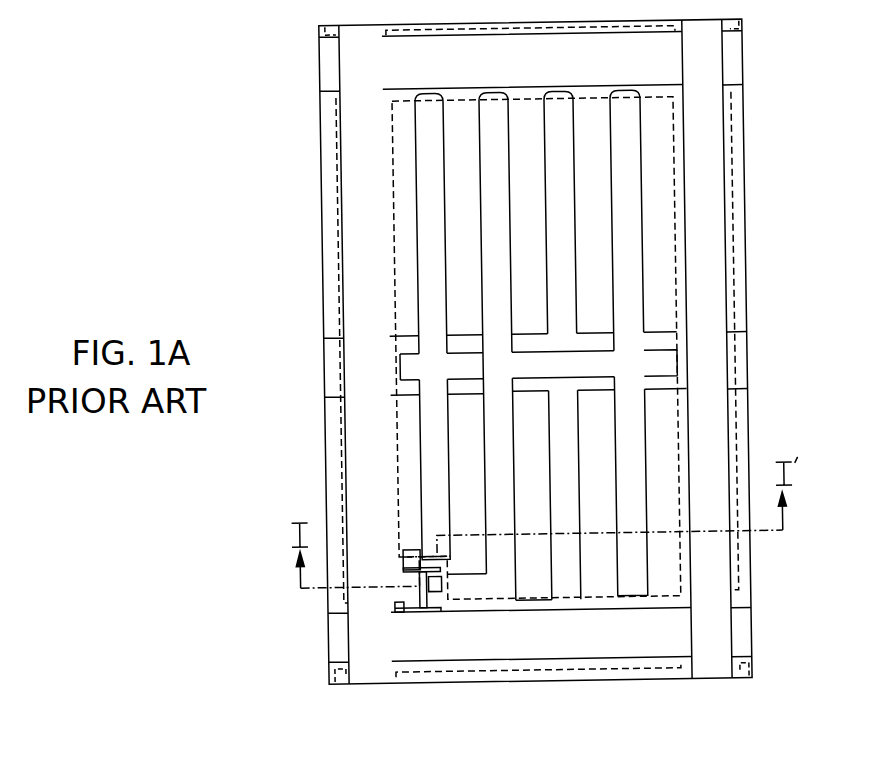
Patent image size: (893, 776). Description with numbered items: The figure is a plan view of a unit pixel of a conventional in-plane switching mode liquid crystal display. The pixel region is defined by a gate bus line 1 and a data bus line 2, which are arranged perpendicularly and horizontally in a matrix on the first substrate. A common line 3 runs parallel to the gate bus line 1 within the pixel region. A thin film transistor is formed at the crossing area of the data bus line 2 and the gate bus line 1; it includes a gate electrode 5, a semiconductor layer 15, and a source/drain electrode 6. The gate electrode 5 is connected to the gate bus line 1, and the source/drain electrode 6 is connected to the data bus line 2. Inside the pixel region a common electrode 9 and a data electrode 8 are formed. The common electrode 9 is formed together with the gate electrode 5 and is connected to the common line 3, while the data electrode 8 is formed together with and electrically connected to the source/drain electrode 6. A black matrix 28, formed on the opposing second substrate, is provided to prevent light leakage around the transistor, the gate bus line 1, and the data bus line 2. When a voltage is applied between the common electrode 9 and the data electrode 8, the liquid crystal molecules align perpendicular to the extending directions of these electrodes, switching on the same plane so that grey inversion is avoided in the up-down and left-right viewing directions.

The gate bus line 1 is at (734, 637).
The data bus line 2 is at (705, 661).
The common line 3 is at (745, 381).
The black matrix 28 is at (736, 437).
The gate electrode 5 is at (420, 613).
The source/drain electrode 6 is at (395, 595).
The semiconductor layer 15 is at (399, 548).
The data electrode 8 is at (629, 592).
The common electrode 9 is at (561, 590).